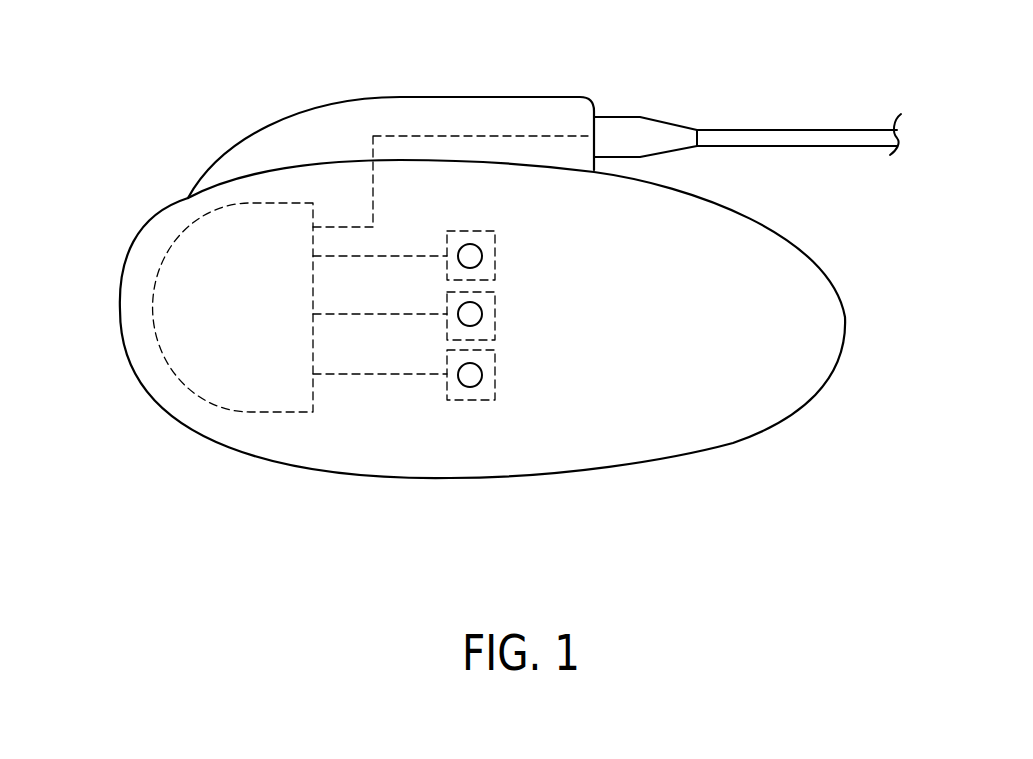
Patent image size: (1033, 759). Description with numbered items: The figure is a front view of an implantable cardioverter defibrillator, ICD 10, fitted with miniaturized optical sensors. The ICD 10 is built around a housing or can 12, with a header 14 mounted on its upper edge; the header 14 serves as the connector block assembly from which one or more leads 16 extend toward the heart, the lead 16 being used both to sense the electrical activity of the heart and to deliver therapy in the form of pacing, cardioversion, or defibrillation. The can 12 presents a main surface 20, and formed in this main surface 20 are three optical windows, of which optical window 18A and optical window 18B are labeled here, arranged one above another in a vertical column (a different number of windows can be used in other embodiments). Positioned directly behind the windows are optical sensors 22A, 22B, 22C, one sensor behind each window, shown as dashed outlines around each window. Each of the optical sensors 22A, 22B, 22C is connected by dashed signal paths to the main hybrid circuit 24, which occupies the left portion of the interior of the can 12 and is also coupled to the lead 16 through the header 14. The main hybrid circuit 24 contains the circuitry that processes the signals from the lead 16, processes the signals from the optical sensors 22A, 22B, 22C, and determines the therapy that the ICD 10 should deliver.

The ICD 10 is at (226, 496).
The housing or can 12 is at (668, 460).
The header 14 is at (448, 97).
The lead 16 is at (747, 135).
The optical window 18A is at (481, 251).
The optical window 18B is at (477, 305).
The main surface 20 is at (741, 372).
The optical sensor 22A is at (498, 236).
The optical sensor 22B is at (497, 312).
The optical sensor 22C is at (463, 400).
The main hybrid circuit 24 is at (153, 310).